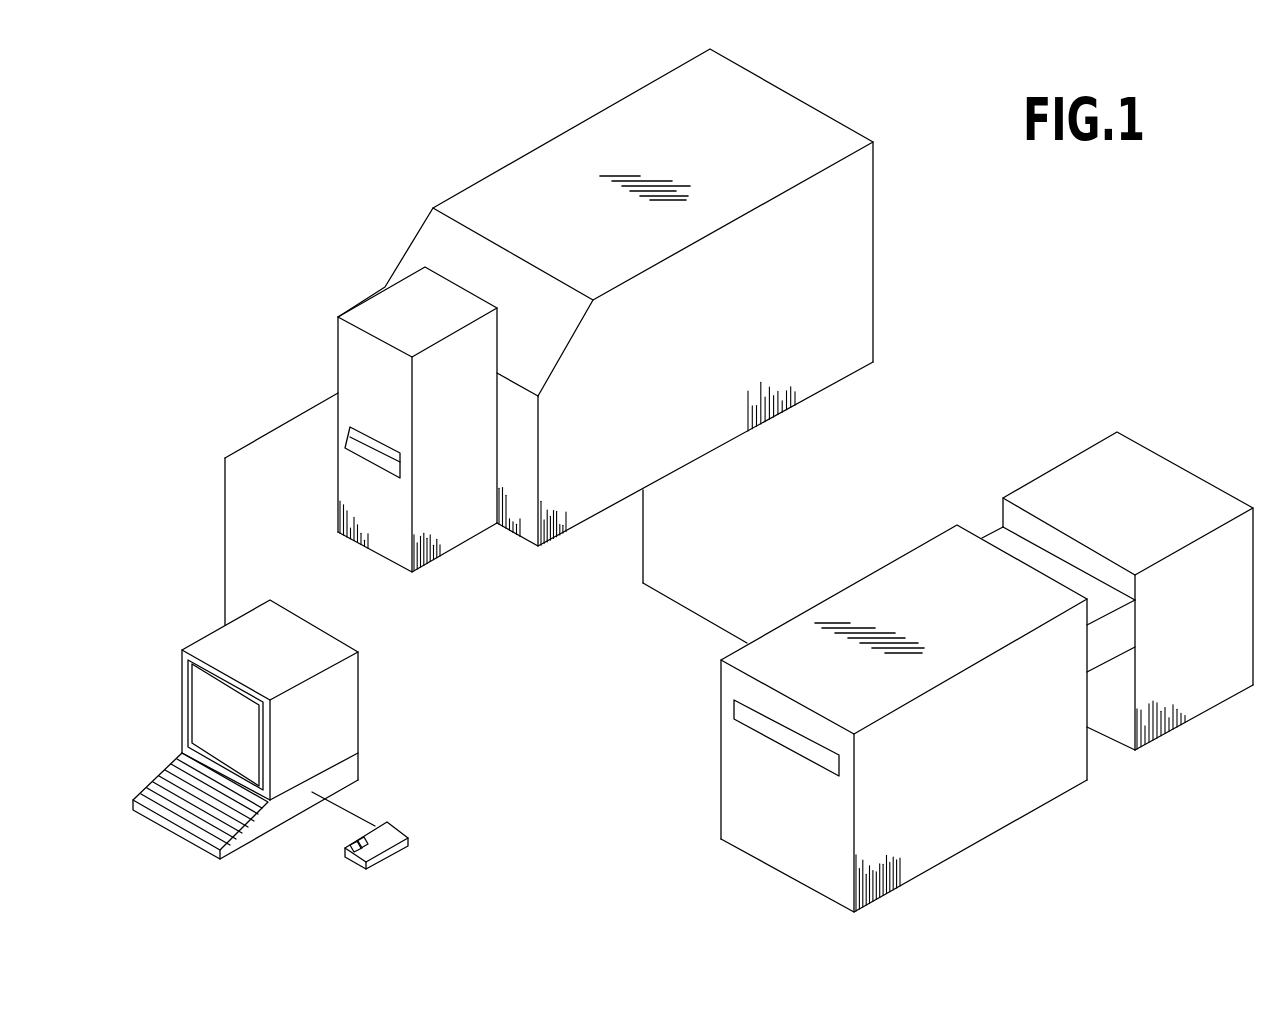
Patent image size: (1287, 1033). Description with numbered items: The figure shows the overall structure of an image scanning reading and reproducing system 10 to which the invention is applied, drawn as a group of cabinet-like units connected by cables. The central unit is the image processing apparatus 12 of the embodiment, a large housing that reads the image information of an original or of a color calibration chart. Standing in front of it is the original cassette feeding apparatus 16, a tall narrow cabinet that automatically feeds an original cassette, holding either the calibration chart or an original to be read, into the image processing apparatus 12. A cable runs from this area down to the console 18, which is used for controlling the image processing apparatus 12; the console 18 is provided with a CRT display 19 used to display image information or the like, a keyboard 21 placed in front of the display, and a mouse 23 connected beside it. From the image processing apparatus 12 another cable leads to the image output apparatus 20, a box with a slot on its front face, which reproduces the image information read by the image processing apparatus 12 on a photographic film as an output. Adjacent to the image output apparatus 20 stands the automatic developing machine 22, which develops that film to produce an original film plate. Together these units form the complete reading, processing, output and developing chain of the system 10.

The image scanning reading and reproducing system 10 is at (459, 158).
The image processing apparatus 12 is at (860, 268).
The original cassette feeding apparatus 16 is at (358, 313).
The console 18 is at (370, 688).
The CRT display 19 is at (193, 690).
The image output apparatus 20 is at (877, 582).
The keyboard 21 is at (233, 849).
The automatic developing machine 22 is at (1037, 493).
The mouse 23 is at (397, 832).